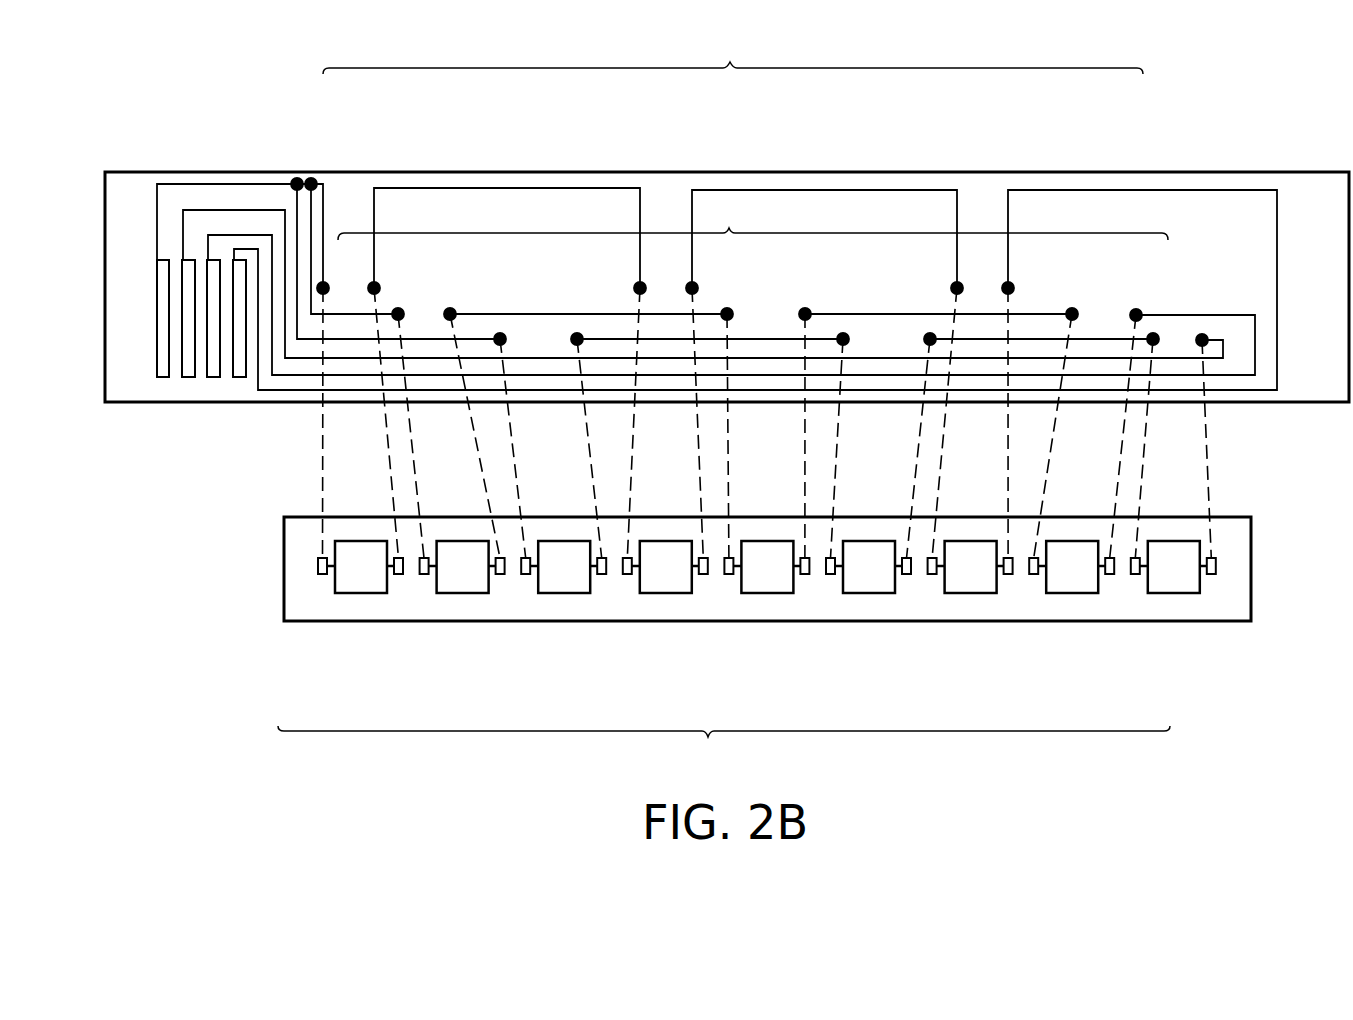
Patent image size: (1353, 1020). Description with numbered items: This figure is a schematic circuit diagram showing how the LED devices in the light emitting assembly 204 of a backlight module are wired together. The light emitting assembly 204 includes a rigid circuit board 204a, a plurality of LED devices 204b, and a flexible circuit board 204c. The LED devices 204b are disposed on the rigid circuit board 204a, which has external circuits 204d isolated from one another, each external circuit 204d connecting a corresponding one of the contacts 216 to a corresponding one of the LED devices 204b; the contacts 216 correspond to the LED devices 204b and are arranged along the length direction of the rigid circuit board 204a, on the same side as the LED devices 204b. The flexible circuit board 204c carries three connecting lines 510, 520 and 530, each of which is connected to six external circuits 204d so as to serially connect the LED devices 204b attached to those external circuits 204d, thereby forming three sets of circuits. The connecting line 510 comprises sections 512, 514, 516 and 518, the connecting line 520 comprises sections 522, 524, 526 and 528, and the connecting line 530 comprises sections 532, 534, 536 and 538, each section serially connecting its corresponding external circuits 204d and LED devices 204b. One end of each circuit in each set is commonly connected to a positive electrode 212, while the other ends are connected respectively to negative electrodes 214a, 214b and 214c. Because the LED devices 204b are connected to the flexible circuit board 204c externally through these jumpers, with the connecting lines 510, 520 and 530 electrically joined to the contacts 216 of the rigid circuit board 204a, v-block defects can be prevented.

The light emitting assembly 204 is at (1287, 748).
The rigid circuit board 204a is at (1200, 605).
The LED devices 204b is at (367, 592).
The flexible circuit board 204c is at (127, 187).
The external circuits 204d is at (1213, 492).
The positive electrode 212 is at (163, 377).
The negative electrode 214a is at (187, 377).
The negative electrode 214b is at (214, 377).
The negative electrode 214c is at (240, 377).
The contacts 216 is at (498, 577).
The connecting line 510 is at (733, 52).
The section 512 is at (327, 199).
The section 514 is at (538, 188).
The section 516 is at (873, 190).
The section 518 is at (1112, 190).
The connecting line 520 is at (753, 219).
The section 522 is at (338, 313).
The section 524 is at (520, 313).
The section 526 is at (871, 313).
The section 528 is at (1167, 313).
The connecting line 530 is at (724, 749).
The section 532 is at (312, 339).
The section 534 is at (663, 339).
The section 536 is at (975, 339).
The section 538 is at (1202, 340).